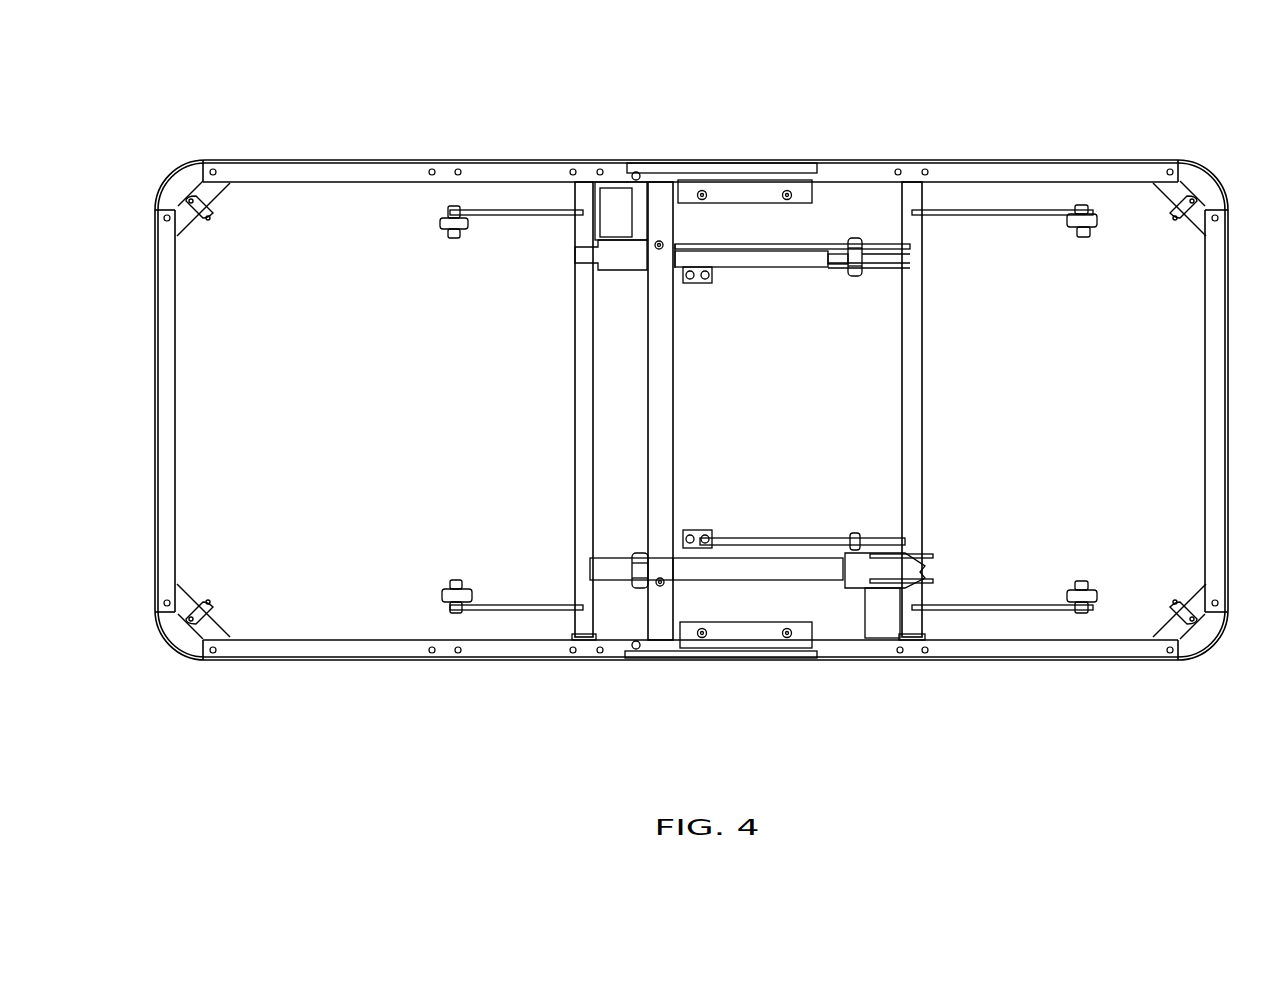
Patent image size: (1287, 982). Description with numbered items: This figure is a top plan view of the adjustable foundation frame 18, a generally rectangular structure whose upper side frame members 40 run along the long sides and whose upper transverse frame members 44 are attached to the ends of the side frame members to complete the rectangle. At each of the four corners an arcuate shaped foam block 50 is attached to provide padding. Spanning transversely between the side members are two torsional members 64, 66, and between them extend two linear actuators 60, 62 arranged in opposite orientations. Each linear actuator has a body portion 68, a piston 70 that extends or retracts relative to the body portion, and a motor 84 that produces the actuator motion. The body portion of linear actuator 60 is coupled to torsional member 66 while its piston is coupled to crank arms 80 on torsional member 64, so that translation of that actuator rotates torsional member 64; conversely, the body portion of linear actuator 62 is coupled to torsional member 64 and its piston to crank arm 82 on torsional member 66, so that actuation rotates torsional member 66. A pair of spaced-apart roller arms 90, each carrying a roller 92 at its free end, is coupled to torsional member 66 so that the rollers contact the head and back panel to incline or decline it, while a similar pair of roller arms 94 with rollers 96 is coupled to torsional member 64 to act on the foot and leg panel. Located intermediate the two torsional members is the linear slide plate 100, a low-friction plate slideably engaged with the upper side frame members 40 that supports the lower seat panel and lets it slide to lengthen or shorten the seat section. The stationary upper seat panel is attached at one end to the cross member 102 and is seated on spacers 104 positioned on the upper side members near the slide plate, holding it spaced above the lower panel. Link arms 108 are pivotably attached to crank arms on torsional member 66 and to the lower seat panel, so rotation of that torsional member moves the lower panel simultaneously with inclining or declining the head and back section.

The foundation frame 18 is at (1048, 106).
The upper side frame member 40 is at (371, 656).
The upper transverse frame member 44 is at (177, 405).
The arcuate shaped foam block 50 is at (172, 185).
The linear actuator 60 is at (792, 235).
The linear actuator 62 is at (778, 596).
The torsional member 64 is at (580, 405).
The torsional member 66 is at (913, 416).
The body portion 68 is at (700, 245).
The piston 70 is at (858, 242).
The crank arms 80 is at (636, 560).
The crank arm 82 is at (853, 280).
The motor 84 is at (615, 190).
The roller arms 90 is at (1015, 226).
The roller 92 is at (1089, 236).
The roller arms 94 is at (518, 226).
The roller 96 is at (438, 224).
The linear slide plate 100 is at (753, 188).
The cross member 102 is at (665, 439).
The spacers 104 is at (690, 165).
The link arms 108 is at (745, 285).